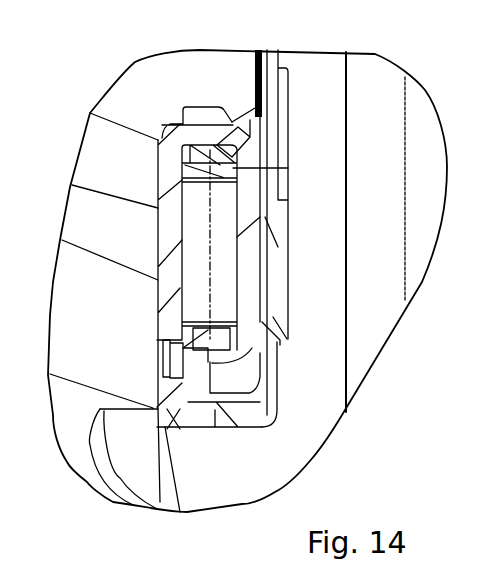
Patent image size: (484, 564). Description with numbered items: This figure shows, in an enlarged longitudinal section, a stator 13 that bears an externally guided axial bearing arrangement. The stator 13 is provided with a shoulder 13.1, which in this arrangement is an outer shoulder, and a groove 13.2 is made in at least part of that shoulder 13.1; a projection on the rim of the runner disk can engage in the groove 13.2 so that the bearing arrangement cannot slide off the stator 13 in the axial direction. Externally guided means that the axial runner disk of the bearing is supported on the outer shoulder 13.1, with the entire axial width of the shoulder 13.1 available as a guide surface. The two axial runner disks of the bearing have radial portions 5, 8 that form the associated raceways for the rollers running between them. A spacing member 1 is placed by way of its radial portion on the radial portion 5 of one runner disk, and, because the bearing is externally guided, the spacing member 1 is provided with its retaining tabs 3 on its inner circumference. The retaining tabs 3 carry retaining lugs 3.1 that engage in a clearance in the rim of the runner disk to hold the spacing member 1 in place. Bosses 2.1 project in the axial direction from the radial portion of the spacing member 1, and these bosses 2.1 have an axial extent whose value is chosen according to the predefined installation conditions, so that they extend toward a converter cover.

The spacing member 1 is at (272, 182).
The bosses 2.1 is at (285, 282).
The retaining tabs 3 is at (213, 412).
The retaining lugs 3.1 is at (167, 412).
The radial portion 5 is at (250, 208).
The radial portion 8 is at (165, 208).
The stator 13 is at (97, 315).
The shoulder 13.1 is at (244, 110).
The groove 13.2 is at (207, 112).